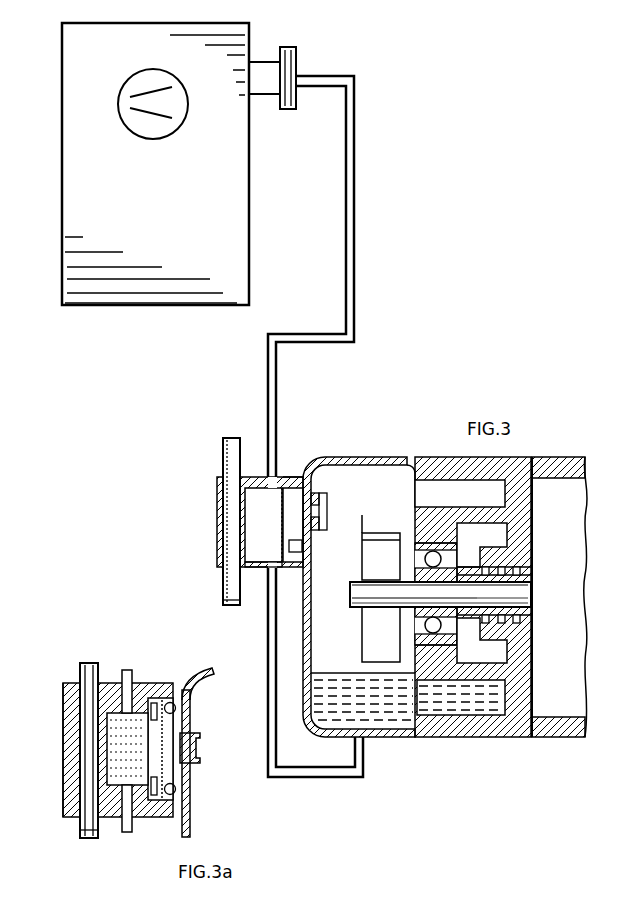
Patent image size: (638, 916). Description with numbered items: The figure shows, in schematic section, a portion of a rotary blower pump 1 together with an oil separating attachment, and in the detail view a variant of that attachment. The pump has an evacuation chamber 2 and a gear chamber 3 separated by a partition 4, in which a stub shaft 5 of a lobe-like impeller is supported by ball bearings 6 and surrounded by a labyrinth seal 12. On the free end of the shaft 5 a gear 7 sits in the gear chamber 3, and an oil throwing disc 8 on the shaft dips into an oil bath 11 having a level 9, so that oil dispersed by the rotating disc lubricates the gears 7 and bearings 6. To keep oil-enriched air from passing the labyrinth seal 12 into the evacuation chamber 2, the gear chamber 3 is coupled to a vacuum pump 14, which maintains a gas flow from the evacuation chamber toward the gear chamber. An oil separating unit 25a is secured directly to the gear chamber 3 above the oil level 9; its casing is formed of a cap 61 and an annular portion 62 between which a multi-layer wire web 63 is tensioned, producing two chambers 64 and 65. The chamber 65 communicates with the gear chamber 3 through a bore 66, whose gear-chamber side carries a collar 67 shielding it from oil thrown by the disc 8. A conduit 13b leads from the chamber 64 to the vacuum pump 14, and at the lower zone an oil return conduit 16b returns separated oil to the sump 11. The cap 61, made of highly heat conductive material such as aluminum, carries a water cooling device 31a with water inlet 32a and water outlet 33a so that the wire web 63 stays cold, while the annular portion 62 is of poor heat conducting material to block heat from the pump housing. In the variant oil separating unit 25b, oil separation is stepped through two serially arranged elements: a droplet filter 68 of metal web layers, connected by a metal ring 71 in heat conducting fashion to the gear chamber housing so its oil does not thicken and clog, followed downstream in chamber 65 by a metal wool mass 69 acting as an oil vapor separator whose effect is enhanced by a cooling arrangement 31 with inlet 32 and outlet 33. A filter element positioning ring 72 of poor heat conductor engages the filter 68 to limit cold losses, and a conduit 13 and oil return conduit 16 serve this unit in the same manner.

In FIG. 3, the vacuum pump 14 is at (249, 213).
In FIG. 3, the conduit 13b is at (354, 240).
In FIG. 3, the oil return conduit 16b is at (268, 685).
In FIG. 3, the rotary blower pump 1 is at (445, 581).
In FIG. 3, the oil separating unit 25a is at (288, 468).
In FIG. 3, the bore 66 is at (327, 462).
In FIG. 3, the collar 67 is at (322, 497).
In FIG. 3, the water outlet 33a is at (223, 441).
In FIG. 3, the water cooling device 31a is at (228, 536).
In FIG. 3, the water inlet 32a is at (223, 600).
In FIG. 3, the multi-layer wire web 63 is at (280, 503).
In FIG. 3, the chamber 64 is at (269, 536).
In FIG. 3A, the chamber 64 is at (107, 719).
In FIG. 3, the cap 61 is at (249, 570).
In FIG. 3, the annular portion 62 is at (294, 570).
In FIG. 3, the chamber 65 is at (308, 541).
In FIG. 3A, the chamber 65 is at (201, 746).
In FIG. 3, the oil throwing disc 8 is at (362, 523).
In FIG. 3, the gears 7 is at (370, 560).
In FIG. 3, the stub shaft 5 is at (351, 608).
In FIG. 3, the gear chamber 3 is at (378, 511).
In FIG. 3A, the gear chamber 3 is at (206, 819).
In FIG. 3, the ball bearings 6 is at (428, 546).
In FIG. 3, the evacuation chamber 2 is at (558, 572).
In FIG. 3, the labyrinth seal 12 is at (536, 623).
In FIG. 3, the oil level 9 is at (334, 670).
In FIG. 3, the oil bath 11 is at (370, 711).
In FIG. 3, the partition 4 is at (516, 728).
In FIG. 3A, the water outlet 33 is at (80, 672).
In FIG. 3A, the conduit 13 is at (128, 668).
In FIG. 3A, the filter element positioning ring 72 is at (157, 698).
In FIG. 3A, the cooling arrangement 31 is at (70, 746).
In FIG. 3A, the metal wool mass 69 is at (120, 757).
In FIG. 3A, the oil separating unit 25b is at (57, 800).
In FIG. 3A, the water inlet 32 is at (80, 832).
In FIG. 3A, the oil return conduit 16 is at (133, 834).
In FIG. 3A, the metal ring 71 is at (182, 720).
In FIG. 3A, the droplet filter 68 is at (178, 775).